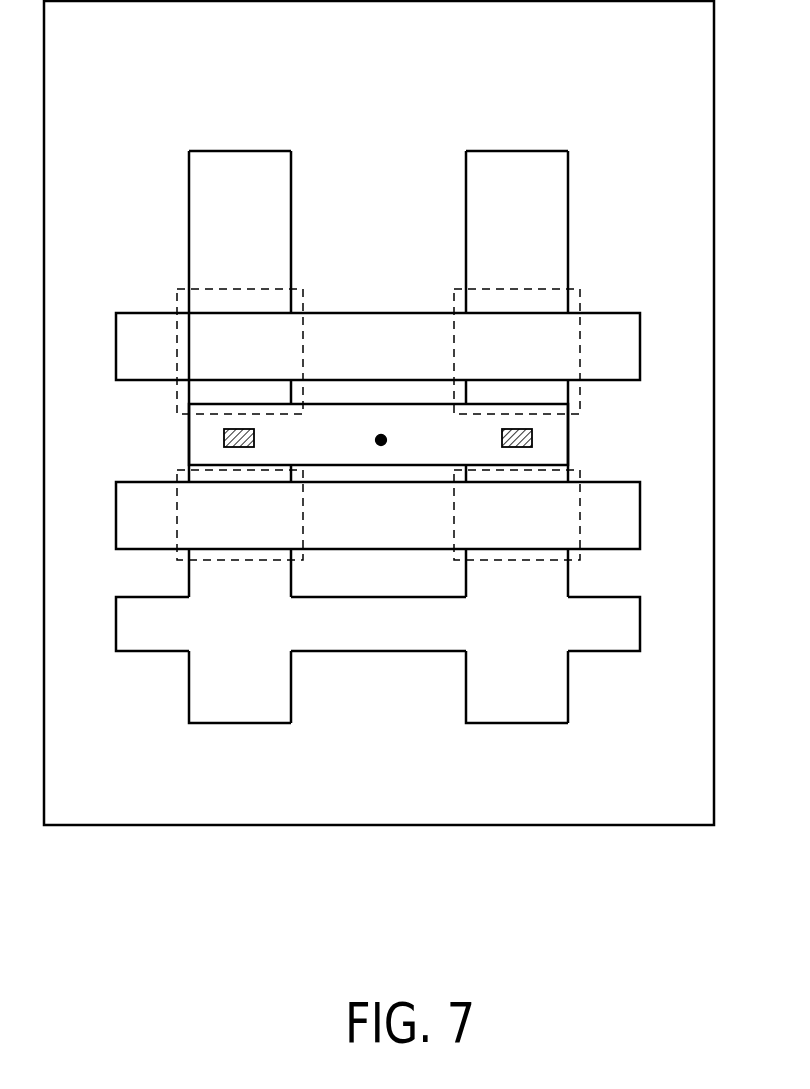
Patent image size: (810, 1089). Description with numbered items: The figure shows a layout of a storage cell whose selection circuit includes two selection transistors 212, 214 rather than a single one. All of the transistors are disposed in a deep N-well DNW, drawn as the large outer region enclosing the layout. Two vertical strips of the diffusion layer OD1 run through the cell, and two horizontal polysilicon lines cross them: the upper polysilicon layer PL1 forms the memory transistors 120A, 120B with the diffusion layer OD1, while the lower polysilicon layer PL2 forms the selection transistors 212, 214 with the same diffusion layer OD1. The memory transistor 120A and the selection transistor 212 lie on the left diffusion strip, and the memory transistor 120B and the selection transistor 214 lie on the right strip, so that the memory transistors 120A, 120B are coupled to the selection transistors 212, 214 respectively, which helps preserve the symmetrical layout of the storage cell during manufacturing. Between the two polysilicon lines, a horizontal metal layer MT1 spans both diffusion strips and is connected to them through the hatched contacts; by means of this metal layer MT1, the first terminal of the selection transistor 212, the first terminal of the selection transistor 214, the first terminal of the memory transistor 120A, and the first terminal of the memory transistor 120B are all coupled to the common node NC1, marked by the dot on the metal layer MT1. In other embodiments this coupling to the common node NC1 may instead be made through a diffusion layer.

The deep N-well DNW is at (379, 413).
The diffusion layer OD1 is at (611, 150).
The polysilicon layer PL1 is at (378, 346).
The polysilicon layer PL2 is at (378, 515).
The metal layer MT1 is at (558, 438).
The common node NC1 is at (381, 440).
The memory transistor 120A is at (178, 290).
The memory transistor 120B is at (578, 290).
The selection transistor 212 is at (178, 471).
The selection transistor 214 is at (582, 522).